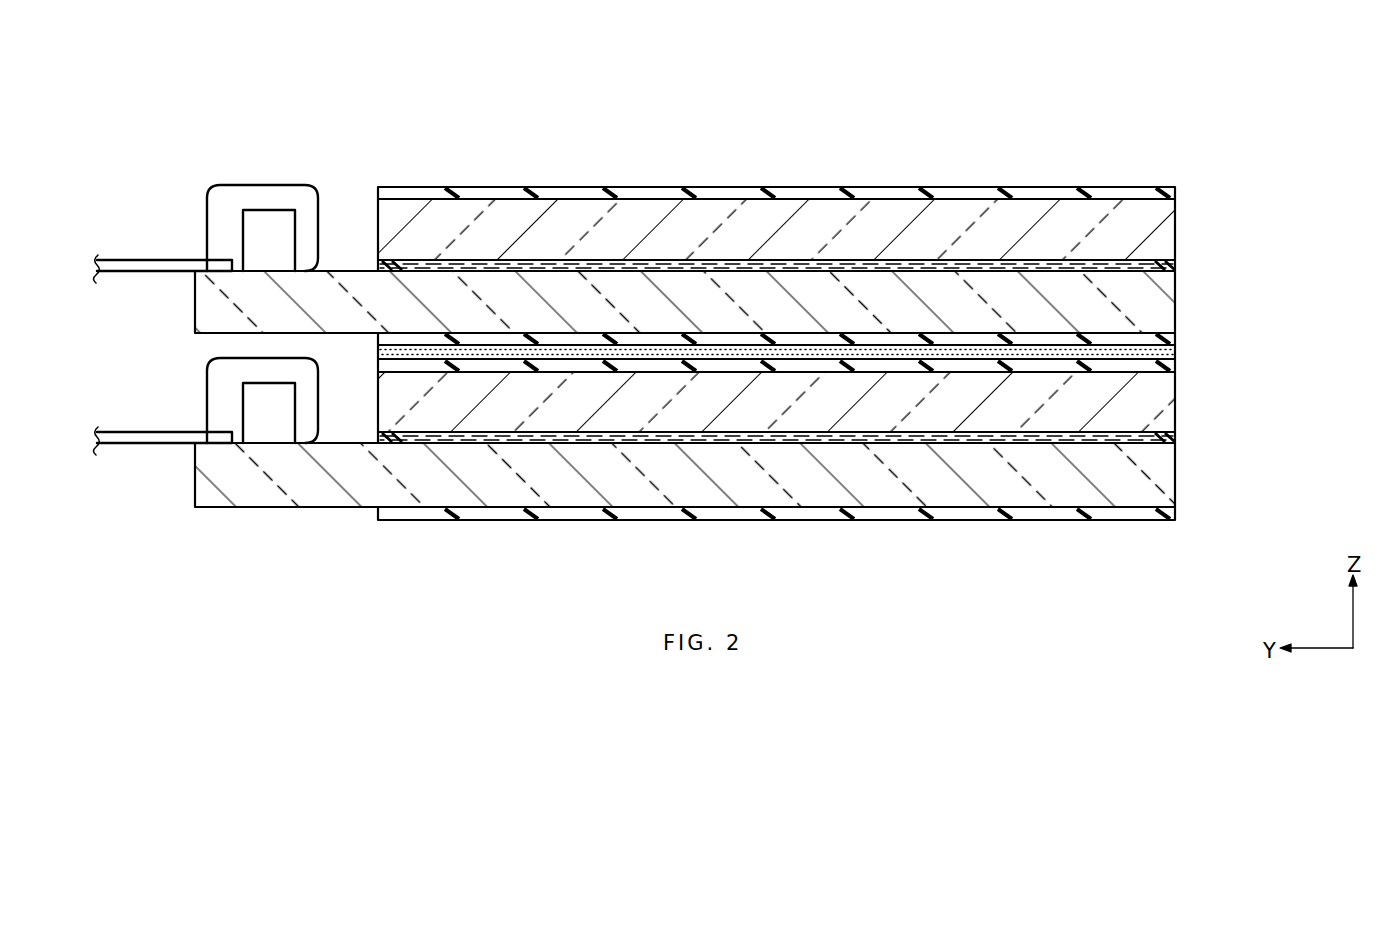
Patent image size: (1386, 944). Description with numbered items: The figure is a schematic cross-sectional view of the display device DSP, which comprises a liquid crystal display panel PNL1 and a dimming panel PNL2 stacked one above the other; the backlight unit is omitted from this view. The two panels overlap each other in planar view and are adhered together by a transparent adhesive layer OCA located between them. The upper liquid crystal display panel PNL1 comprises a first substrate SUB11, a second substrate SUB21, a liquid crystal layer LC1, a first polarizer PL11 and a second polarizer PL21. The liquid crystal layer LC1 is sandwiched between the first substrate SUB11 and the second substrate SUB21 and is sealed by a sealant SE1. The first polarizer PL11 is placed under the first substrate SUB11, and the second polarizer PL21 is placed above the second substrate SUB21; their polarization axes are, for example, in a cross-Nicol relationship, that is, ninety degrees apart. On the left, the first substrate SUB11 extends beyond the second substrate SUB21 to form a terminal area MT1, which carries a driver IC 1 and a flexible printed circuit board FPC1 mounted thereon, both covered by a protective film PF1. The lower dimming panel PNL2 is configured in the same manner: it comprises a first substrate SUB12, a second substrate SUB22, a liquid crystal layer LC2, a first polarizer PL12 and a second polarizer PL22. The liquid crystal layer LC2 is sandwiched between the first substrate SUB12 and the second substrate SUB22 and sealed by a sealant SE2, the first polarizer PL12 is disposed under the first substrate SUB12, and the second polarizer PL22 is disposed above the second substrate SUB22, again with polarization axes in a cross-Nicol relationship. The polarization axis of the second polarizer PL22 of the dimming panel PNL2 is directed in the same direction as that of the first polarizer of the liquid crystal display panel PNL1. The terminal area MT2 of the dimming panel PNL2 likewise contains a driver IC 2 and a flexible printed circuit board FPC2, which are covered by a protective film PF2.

The display device DSP is at (1148, 126).
The liquid crystal display panel PNL1 is at (1287, 170).
The dimming panel PNL2 is at (1287, 365).
The second polarizer PL21 is at (1176, 193).
The second substrate SUB21 is at (1165, 232).
The sealant SE1 is at (1176, 266).
The first substrate SUB11 is at (1167, 308).
The first polarizer PL11 is at (1176, 339).
The adhesive layer OCA is at (1176, 352).
The second polarizer PL22 is at (1176, 366).
The second substrate SUB22 is at (1165, 418).
The sealant SE2 is at (1176, 438).
The first substrate SUB12 is at (1165, 480).
The first polarizer PL12 is at (1176, 513).
The liquid crystal layer LC1 is at (897, 262).
The liquid crystal layer LC2 is at (905, 442).
The flexible printed circuit board FPC1 is at (115, 259).
The flexible printed circuit board FPC2 is at (115, 431).
The protective film PF1 is at (296, 186).
The protective film PF2 is at (320, 390).
The driver IC 1 is at (296, 248).
The driver IC 2 is at (295, 429).
The terminal area MT1 is at (361, 261).
The terminal area MT2 is at (356, 434).